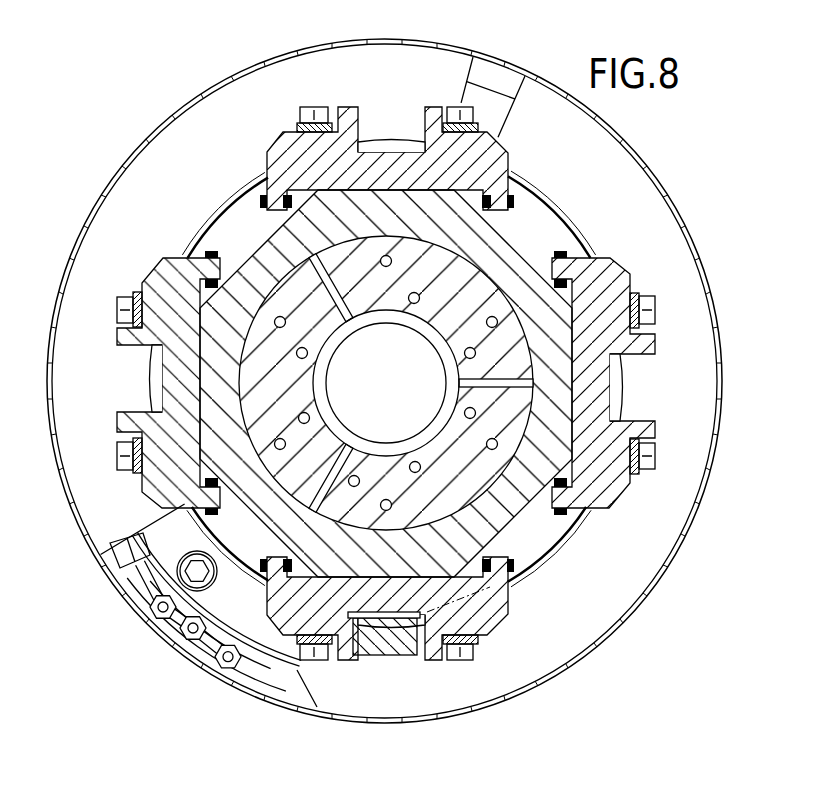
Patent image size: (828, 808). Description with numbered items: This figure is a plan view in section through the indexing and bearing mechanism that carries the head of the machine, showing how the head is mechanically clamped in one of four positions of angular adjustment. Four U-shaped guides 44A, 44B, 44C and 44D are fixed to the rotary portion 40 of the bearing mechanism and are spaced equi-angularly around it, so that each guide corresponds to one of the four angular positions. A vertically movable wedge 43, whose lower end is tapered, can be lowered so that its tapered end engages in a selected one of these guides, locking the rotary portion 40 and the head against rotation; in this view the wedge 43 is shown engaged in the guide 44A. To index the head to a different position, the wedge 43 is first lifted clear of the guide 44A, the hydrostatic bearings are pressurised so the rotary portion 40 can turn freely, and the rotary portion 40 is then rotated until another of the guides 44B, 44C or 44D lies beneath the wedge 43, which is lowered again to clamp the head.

The rotary portion 40 is at (588, 630).
The wedge 43 is at (387, 646).
The U-shaped guide 44A is at (437, 650).
The U-shaped guide 44B is at (148, 382).
The U-shaped guide 44C is at (398, 136).
The U-shaped guide 44D is at (625, 382).